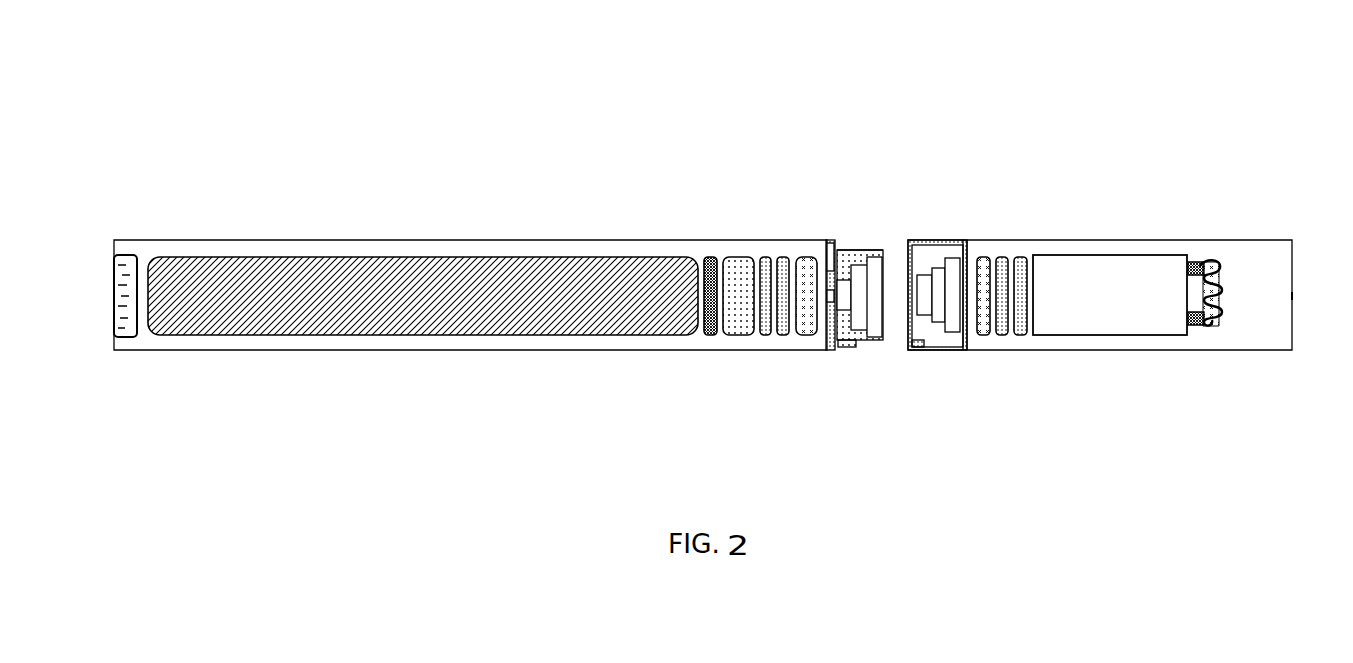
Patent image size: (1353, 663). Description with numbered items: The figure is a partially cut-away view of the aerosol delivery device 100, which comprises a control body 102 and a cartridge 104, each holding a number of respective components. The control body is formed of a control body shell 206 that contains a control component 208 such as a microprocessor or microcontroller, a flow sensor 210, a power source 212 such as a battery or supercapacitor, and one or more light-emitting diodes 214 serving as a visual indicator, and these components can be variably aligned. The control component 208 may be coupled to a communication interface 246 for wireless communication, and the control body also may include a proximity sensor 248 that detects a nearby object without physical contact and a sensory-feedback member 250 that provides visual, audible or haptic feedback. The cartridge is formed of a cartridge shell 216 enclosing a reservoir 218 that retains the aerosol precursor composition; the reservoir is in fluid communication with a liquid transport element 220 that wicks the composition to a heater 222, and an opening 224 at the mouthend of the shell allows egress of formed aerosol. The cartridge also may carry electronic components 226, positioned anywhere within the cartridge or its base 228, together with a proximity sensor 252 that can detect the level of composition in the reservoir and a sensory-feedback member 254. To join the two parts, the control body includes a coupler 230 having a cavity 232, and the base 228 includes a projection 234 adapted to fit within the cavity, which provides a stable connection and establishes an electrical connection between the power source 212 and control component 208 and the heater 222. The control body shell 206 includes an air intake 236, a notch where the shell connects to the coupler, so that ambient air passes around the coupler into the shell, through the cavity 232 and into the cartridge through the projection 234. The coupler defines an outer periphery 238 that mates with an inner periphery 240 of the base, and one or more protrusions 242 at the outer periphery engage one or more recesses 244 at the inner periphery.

The aerosol delivery device 100 is at (600, 82).
The control body 102 is at (383, 185).
The cartridge 104 is at (1103, 160).
The control body shell 206 is at (250, 350).
The control component 208 is at (745, 335).
The flow sensor 210 is at (802, 335).
The power source 212 is at (395, 335).
The light-emitting diode 214 is at (127, 340).
The cartridge shell 216 is at (1087, 350).
The reservoir 218 is at (1135, 335).
The liquid transport element 220 is at (1203, 330).
The heater 222 is at (1222, 320).
The opening 224 is at (1290, 290).
The electronic components 226 is at (983, 335).
The base 228 is at (960, 350).
The coupler 230 is at (862, 345).
The cavity 232 is at (856, 250).
The projection 234 is at (938, 250).
The air intake 236 is at (822, 245).
The outer periphery 238 is at (863, 250).
The inner periphery 240 is at (930, 245).
The protrusion 242 is at (845, 350).
The recess 244 is at (927, 350).
The communication interface 246 is at (710, 257).
The proximity sensor 248 is at (765, 257).
The sensory-feedback member 250 is at (781, 335).
The proximity sensor 252 is at (1020, 258).
The sensory-feedback member 254 is at (1000, 258).